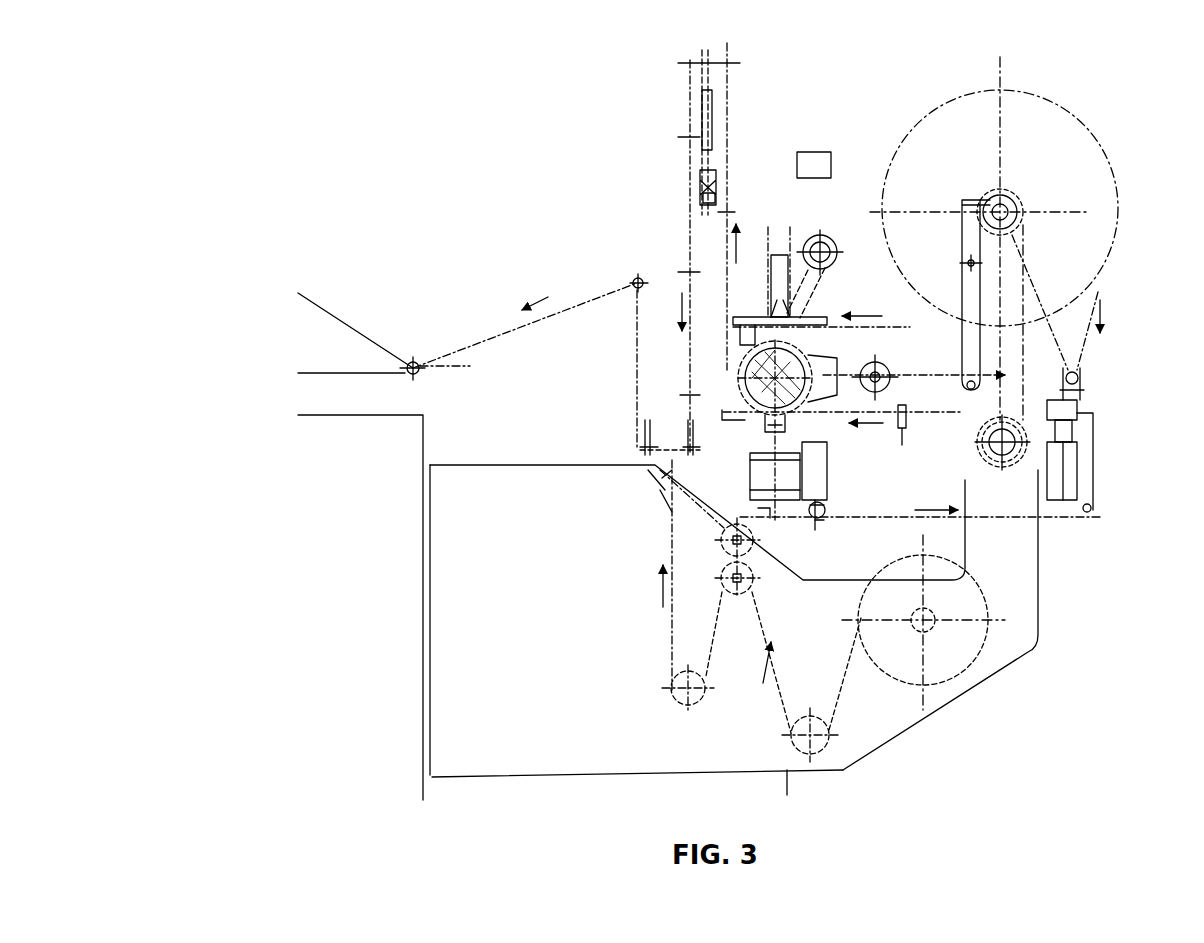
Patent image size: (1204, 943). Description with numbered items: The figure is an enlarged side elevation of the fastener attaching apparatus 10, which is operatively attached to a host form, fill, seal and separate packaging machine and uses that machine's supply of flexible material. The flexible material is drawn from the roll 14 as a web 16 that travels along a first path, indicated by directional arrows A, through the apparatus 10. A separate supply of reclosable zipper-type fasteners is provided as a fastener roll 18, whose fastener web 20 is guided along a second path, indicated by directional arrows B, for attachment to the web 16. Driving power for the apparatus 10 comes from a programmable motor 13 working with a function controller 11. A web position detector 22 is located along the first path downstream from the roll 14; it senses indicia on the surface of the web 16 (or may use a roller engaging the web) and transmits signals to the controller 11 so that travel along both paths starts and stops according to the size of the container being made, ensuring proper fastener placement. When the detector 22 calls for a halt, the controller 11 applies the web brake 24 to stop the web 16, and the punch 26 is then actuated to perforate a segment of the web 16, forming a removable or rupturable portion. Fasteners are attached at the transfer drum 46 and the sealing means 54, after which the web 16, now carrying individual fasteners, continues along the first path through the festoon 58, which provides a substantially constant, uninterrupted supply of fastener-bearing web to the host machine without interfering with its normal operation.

The fastener attaching apparatus 10 is at (868, 72).
The function controller 11 is at (815, 152).
The programmable motor 13 is at (835, 243).
The roll 14 is at (985, 575).
The web 16 is at (1097, 490).
The fastener roll 18 is at (1075, 118).
The fastener web 20 is at (962, 340).
The web position detector 22 is at (964, 437).
The web brake 24 is at (828, 512).
The punch 26 is at (1073, 460).
The transfer drum 46 is at (748, 345).
The sealing means 54 is at (770, 432).
The festoon 58 is at (713, 136).